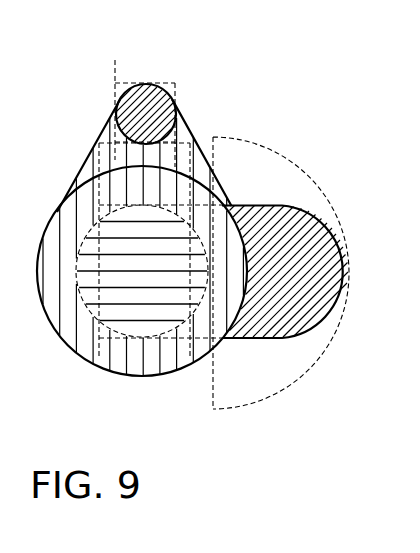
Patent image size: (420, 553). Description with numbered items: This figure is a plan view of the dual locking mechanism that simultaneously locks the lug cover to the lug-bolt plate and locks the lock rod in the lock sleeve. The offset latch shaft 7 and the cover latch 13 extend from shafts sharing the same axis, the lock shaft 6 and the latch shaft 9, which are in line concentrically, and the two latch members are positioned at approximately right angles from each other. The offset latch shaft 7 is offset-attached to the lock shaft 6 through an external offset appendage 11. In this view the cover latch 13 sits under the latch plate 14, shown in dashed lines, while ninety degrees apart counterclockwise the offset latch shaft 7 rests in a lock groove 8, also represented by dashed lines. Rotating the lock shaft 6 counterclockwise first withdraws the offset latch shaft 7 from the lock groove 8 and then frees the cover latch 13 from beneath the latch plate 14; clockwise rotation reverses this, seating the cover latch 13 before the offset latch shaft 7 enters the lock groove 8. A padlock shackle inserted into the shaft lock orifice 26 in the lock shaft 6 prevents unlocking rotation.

The lock shaft 6 is at (62, 338).
The offset latch shaft 7 is at (130, 108).
The lock groove 8 is at (163, 83).
The latch shaft 9 is at (117, 333).
The external offset appendage 11 is at (98, 133).
The cover latch 13 is at (308, 240).
The latch plate 14 is at (274, 150).
The shaft lock orifice 26 is at (100, 203).